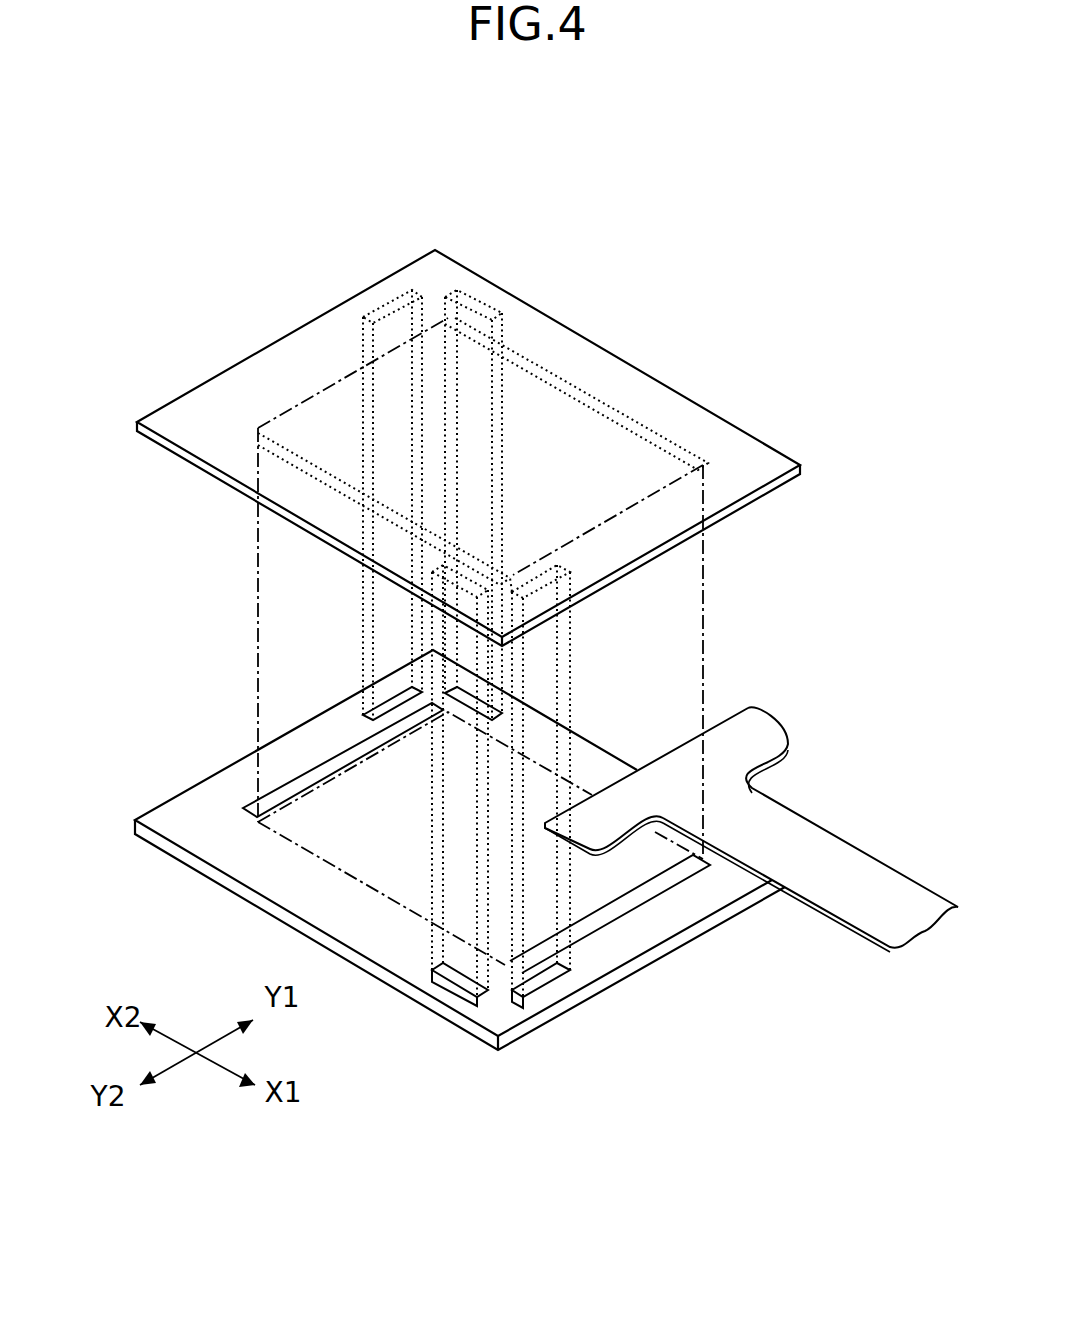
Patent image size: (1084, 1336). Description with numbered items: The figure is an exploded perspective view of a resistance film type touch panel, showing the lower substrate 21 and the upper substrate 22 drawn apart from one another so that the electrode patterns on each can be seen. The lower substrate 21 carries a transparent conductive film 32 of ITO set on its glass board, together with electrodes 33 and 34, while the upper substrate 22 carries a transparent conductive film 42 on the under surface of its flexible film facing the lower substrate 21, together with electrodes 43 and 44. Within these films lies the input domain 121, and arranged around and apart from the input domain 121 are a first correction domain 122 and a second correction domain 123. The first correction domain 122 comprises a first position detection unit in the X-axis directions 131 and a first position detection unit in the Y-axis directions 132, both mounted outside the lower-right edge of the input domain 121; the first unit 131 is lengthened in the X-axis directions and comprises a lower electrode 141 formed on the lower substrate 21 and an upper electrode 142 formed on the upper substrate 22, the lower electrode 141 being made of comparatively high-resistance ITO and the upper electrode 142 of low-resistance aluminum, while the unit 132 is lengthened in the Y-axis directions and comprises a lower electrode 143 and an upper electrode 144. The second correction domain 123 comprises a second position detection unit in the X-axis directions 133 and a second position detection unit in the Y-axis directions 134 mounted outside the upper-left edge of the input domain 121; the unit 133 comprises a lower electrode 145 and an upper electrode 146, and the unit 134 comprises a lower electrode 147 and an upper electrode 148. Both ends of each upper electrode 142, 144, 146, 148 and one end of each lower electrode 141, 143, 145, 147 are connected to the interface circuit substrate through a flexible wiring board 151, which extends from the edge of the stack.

The lower substrate 21 is at (190, 803).
The upper substrate 22 is at (753, 453).
The conductive film 32 is at (353, 875).
The electrode 33 is at (665, 882).
The electrode 34 is at (343, 762).
The conductive film 42 is at (318, 392).
The electrode 43 is at (595, 393).
The electrode 44 is at (293, 460).
The input domain 121 is at (487, 639).
The first correction domain 122 is at (464, 902).
The second correction domain 123 is at (425, 428).
The first position detection unit in the X-axis directions 131 is at (381, 870).
The first position detection unit in the Y-axis directions 132 is at (583, 874).
The second position detection unit in the X-axis directions 133 is at (515, 450).
The second position detection unit in the Y-axis directions 134 is at (344, 450).
The lower electrode 141 is at (447, 993).
The upper electrode 142 is at (432, 580).
The lower electrode 143 is at (533, 993).
The upper electrode 144 is at (547, 588).
The lower electrode 145 is at (477, 688).
The upper electrode 146 is at (480, 302).
The lower electrode 147 is at (392, 703).
The upper electrode 148 is at (380, 302).
The flexible wiring board 151 is at (815, 825).